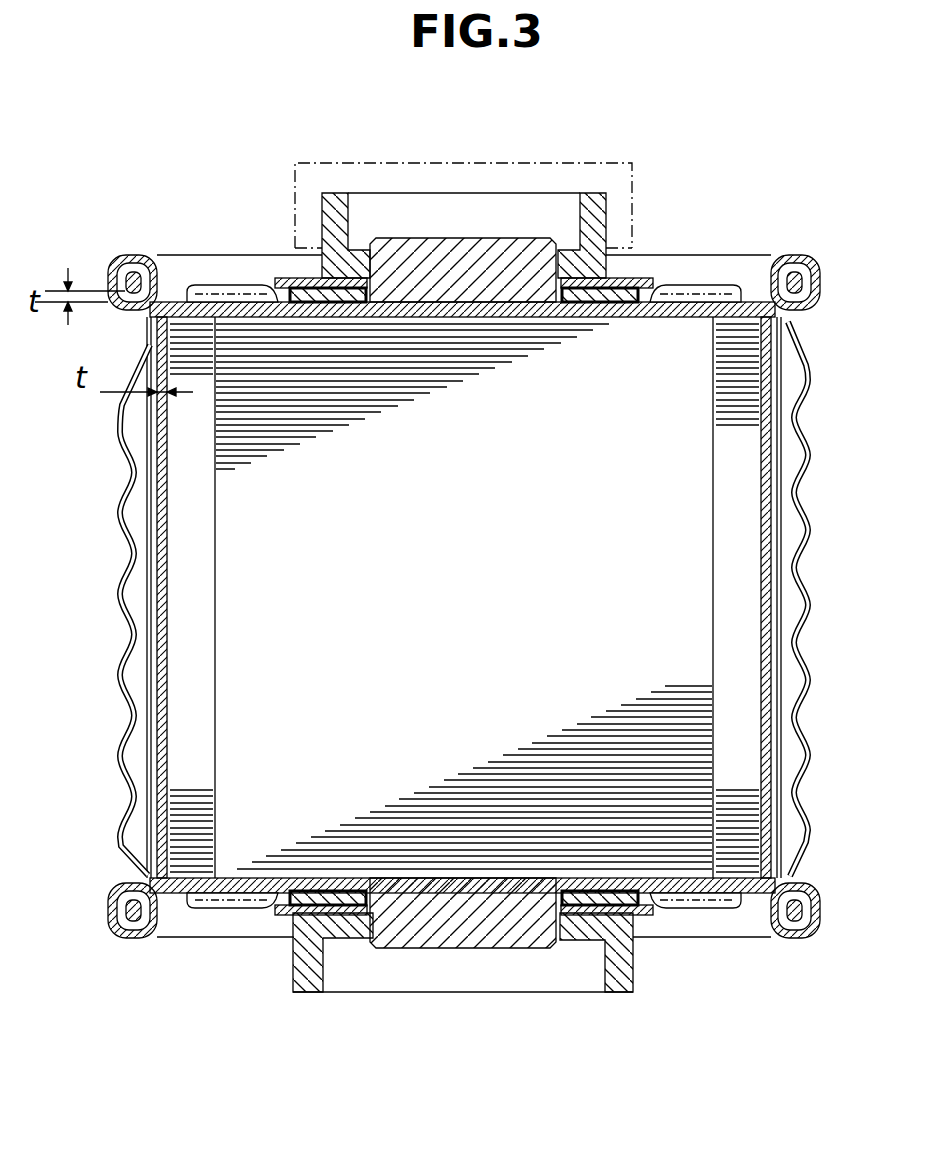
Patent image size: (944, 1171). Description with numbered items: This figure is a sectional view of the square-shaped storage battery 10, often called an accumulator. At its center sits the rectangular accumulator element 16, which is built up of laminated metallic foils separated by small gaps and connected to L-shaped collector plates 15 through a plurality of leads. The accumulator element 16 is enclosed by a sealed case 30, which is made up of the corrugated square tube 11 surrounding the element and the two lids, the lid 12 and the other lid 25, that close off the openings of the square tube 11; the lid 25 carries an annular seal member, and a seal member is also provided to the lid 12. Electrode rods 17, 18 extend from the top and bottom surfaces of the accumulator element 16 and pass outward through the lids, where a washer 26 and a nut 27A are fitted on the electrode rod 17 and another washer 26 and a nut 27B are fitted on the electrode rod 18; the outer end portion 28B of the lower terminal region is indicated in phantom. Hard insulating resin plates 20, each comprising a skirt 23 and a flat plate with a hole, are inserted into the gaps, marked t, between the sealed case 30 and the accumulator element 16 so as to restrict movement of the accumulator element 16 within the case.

The square-shaped storage battery 10 is at (156, 181).
The corrugated square tube 11 is at (125, 502).
The lid 12 is at (753, 900).
The L-shaped collector plate 15 is at (241, 323).
The accumulator element 16 is at (313, 613).
The electrode rod 17 is at (515, 250).
The electrode rod 18 is at (513, 933).
The resin plate 20 is at (227, 907).
The skirt 23 is at (779, 333).
The lid 25 is at (755, 300).
The washer 26 is at (640, 280).
The nut 27A is at (590, 205).
The nut 27B is at (620, 992).
The external connection portion 28B is at (393, 162).
The sealed case 30 is at (806, 600).